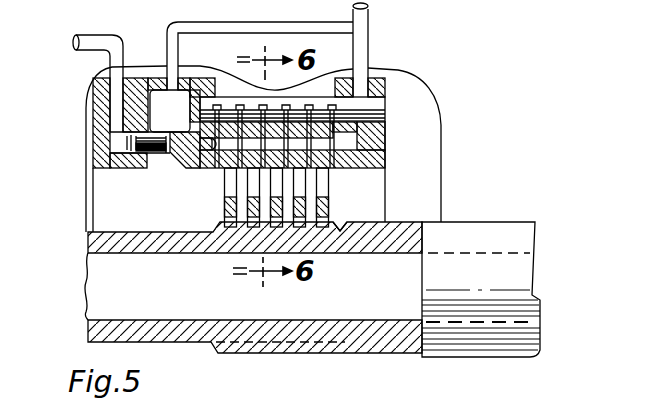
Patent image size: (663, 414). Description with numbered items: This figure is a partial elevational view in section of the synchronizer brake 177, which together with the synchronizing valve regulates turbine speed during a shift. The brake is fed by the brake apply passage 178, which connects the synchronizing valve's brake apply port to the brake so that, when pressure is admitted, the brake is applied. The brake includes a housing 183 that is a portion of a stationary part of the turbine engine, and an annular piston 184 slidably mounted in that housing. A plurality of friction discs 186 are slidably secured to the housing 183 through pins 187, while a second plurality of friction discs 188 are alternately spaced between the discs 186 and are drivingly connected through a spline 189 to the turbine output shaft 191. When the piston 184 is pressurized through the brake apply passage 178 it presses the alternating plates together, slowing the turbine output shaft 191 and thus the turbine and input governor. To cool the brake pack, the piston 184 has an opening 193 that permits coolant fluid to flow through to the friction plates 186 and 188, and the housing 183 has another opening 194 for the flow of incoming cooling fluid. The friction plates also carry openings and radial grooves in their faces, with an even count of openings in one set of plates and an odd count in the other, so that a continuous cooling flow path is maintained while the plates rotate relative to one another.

The synchronizer brake 177 is at (444, 146).
The brake apply passage 178 is at (118, 46).
The housing 183 is at (104, 112).
The annular piston 184 is at (156, 152).
The friction discs 186 is at (240, 100).
The pins 187 is at (367, 107).
The friction discs 188 is at (298, 205).
The spline 189 is at (337, 227).
The turbine output shaft 191 is at (108, 296).
The opening 193 is at (187, 132).
The opening 194 is at (358, 142).